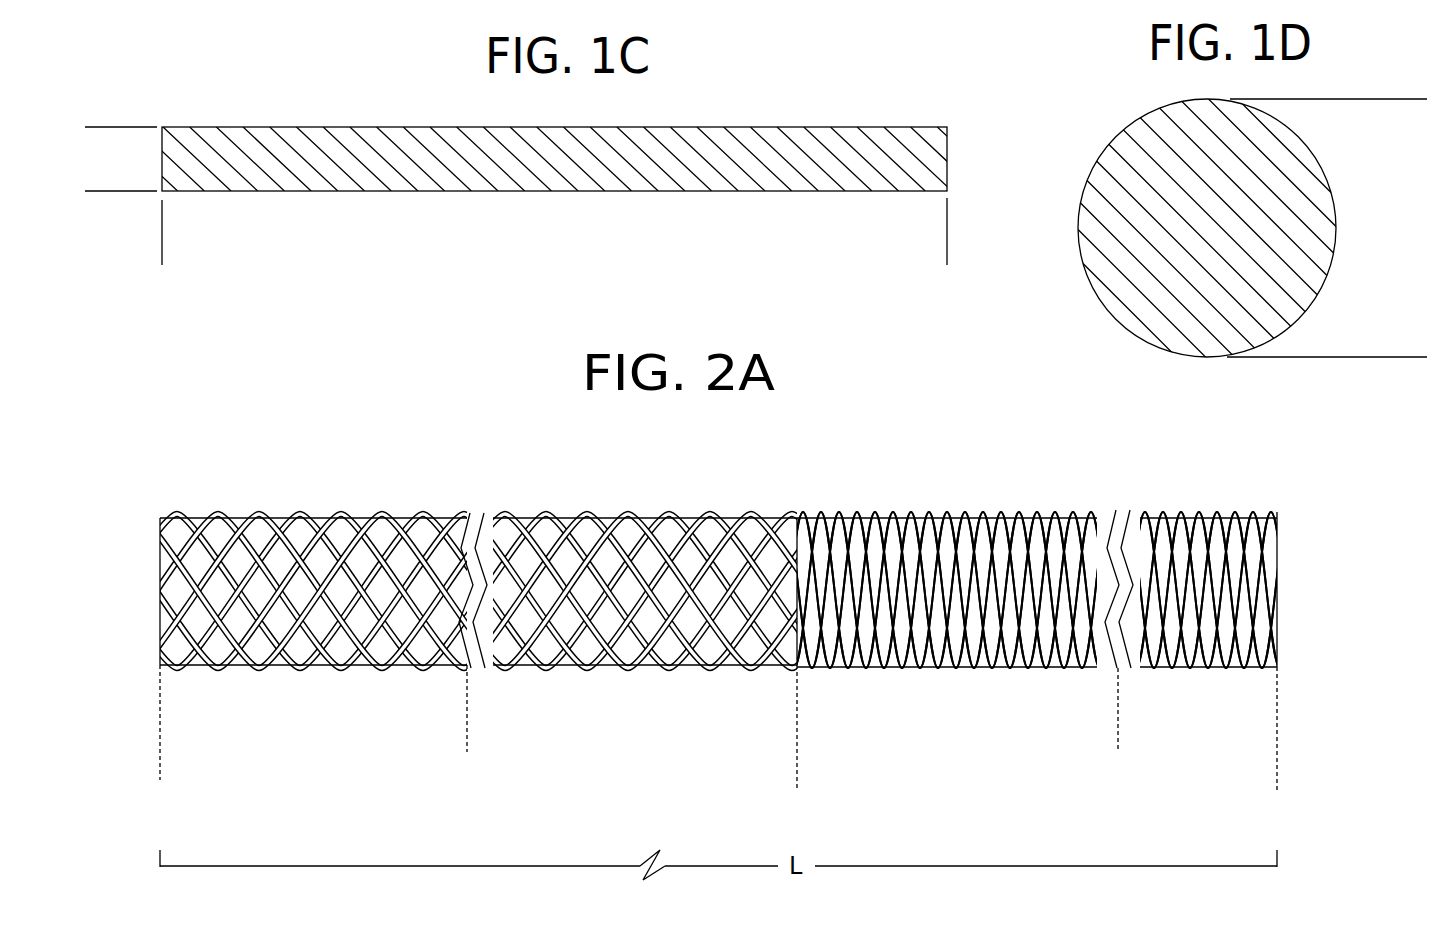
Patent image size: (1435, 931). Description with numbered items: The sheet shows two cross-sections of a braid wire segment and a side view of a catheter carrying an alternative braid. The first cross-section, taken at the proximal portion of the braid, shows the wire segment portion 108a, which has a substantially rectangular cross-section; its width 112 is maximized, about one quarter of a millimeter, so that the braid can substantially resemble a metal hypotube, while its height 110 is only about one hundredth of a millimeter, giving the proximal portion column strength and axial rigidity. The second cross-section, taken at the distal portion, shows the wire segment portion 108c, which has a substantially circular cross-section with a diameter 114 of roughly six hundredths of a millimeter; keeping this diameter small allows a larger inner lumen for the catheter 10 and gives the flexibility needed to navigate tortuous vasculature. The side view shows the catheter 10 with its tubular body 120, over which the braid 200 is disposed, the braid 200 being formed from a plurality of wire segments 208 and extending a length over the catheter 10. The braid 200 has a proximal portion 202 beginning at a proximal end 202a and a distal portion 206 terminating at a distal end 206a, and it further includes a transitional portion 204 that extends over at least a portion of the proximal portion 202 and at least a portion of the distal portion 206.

In FIG. 1C, the wire segment portion 108a is at (283, 127).
In FIG. 1C, the height 110 is at (103, 127).
In FIG. 1C, the width 112 is at (162, 251).
In FIG. 1D, the wire segment portion 108c is at (1128, 303).
In FIG. 1D, the diameter 114 is at (1402, 99).
In FIG. 2A, the catheter 10 is at (687, 536).
In FIG. 2A, the braid 200 is at (655, 463).
In FIG. 2A, the proximal end 202a is at (160, 562).
In FIG. 2A, the tubular body 120 is at (485, 517).
In FIG. 2A, the wire segments 208 is at (720, 517).
In FIG. 2A, the distal end 206a is at (1277, 613).
In FIG. 2A, the proximal portion 202 is at (160, 795).
In FIG. 2A, the transitional portion 204 is at (467, 735).
In FIG. 2A, the distal portion 206 is at (1277, 795).